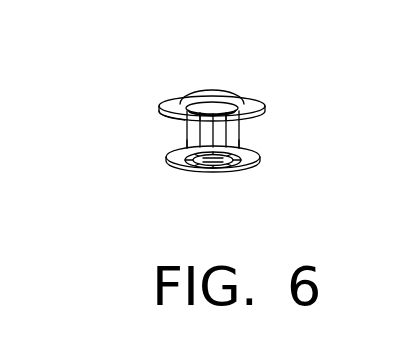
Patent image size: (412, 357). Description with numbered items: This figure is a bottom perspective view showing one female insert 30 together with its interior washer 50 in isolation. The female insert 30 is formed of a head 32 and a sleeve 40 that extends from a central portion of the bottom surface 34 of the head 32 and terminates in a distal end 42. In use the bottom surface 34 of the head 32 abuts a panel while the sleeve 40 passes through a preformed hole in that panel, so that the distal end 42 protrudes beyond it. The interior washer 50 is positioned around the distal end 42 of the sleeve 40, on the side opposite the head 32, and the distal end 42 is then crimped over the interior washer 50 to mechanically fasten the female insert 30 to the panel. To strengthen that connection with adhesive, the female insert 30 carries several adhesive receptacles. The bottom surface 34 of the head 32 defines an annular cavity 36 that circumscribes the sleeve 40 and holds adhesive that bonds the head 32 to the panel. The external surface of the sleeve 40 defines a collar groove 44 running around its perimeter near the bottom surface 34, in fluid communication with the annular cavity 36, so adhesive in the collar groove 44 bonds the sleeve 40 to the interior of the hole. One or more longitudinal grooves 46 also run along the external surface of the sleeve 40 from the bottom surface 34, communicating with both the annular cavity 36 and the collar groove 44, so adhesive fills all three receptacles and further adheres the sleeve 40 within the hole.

The female insert 30 is at (127, 90).
The head 32 is at (192, 95).
The bottom surface 34 is at (267, 116).
The annular cavity 36 is at (168, 122).
The sleeve 40 is at (241, 135).
The distal end 42 is at (240, 162).
The collar groove 44 is at (187, 132).
The longitudinal grooves 46 is at (205, 122).
The interior washer 50 is at (260, 158).